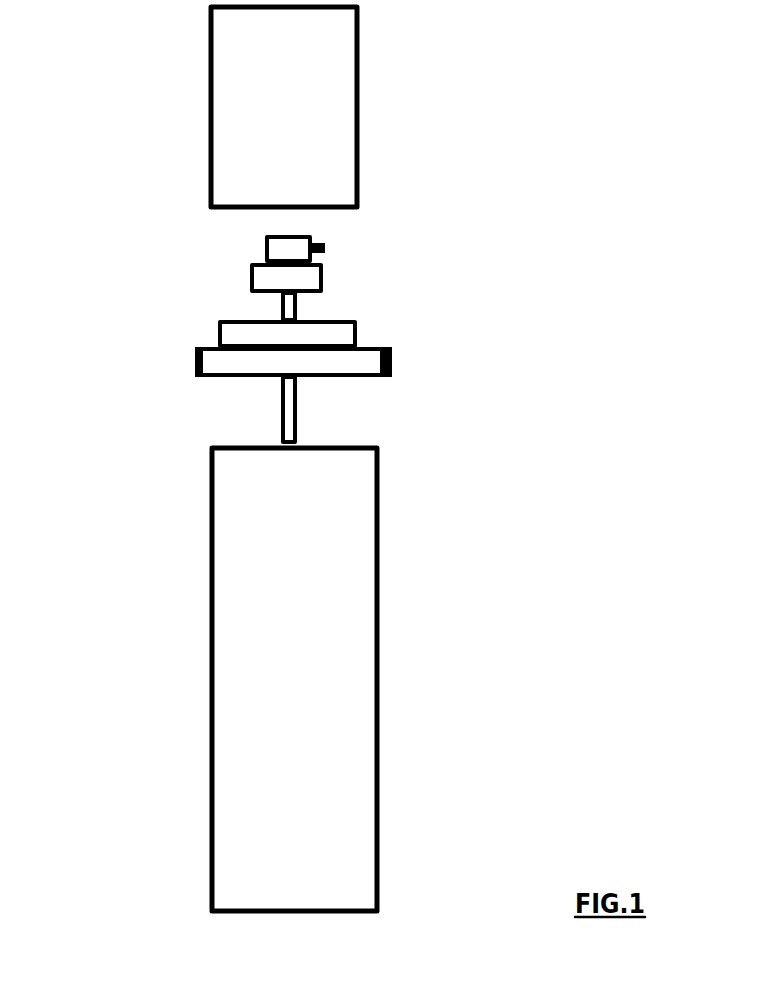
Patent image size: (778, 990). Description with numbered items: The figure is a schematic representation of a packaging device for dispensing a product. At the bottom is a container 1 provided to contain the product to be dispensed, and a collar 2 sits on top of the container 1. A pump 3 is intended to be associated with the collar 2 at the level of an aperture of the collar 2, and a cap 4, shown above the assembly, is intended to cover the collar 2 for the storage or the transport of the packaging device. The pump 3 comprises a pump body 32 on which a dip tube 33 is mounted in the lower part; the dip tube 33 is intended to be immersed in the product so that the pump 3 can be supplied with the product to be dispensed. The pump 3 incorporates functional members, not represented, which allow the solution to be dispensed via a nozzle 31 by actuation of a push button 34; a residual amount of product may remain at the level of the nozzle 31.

The container 1 is at (230, 570).
The collar 2 is at (195, 357).
The pump 3 is at (403, 321).
The cap 4 is at (233, 122).
The nozzle 31 is at (325, 248).
The pump body 32 is at (312, 283).
The dip tube 33 is at (379, 409).
The push button 34 is at (303, 237).